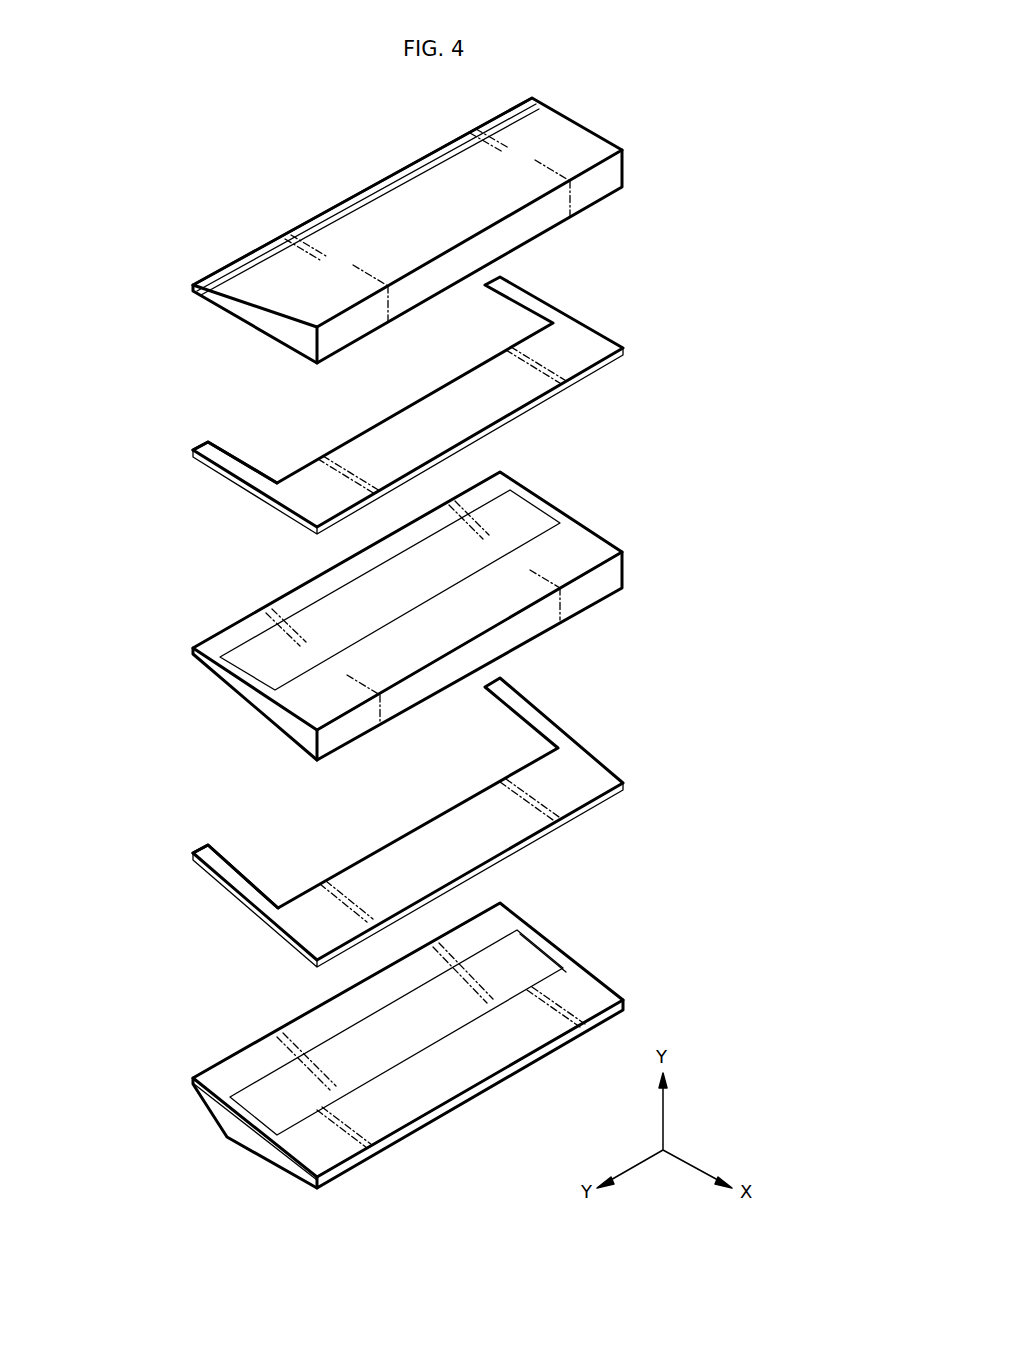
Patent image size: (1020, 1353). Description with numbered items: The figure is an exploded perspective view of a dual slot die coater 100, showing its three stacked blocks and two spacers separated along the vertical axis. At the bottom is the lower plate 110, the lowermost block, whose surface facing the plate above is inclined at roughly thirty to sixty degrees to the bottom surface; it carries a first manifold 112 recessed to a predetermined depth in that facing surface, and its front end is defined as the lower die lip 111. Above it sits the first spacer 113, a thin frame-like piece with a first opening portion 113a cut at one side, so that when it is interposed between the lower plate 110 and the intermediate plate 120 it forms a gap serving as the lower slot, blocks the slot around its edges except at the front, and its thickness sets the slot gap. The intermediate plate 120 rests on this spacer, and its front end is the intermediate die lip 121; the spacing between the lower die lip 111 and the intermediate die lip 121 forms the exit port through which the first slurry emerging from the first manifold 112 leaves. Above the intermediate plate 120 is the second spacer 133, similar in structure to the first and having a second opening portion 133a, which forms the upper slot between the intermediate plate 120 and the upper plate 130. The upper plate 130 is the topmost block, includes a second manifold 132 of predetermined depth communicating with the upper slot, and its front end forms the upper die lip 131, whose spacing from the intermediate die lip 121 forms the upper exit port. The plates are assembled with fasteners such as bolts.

The dual slot die coater 100 is at (158, 170).
The lower plate 110 is at (636, 958).
The lower die lip 111 is at (270, 1049).
The first manifold 112 is at (526, 970).
The first spacer 113 is at (593, 770).
The first opening portion 113a is at (303, 833).
The intermediate plate 120 is at (636, 539).
The intermediate die lip 121 is at (278, 598).
The second manifold 132 is at (516, 528).
The upper plate 130 is at (636, 134).
The upper die lip 131 is at (253, 262).
The second spacer 133 is at (602, 348).
The second opening portion 133a is at (291, 428).